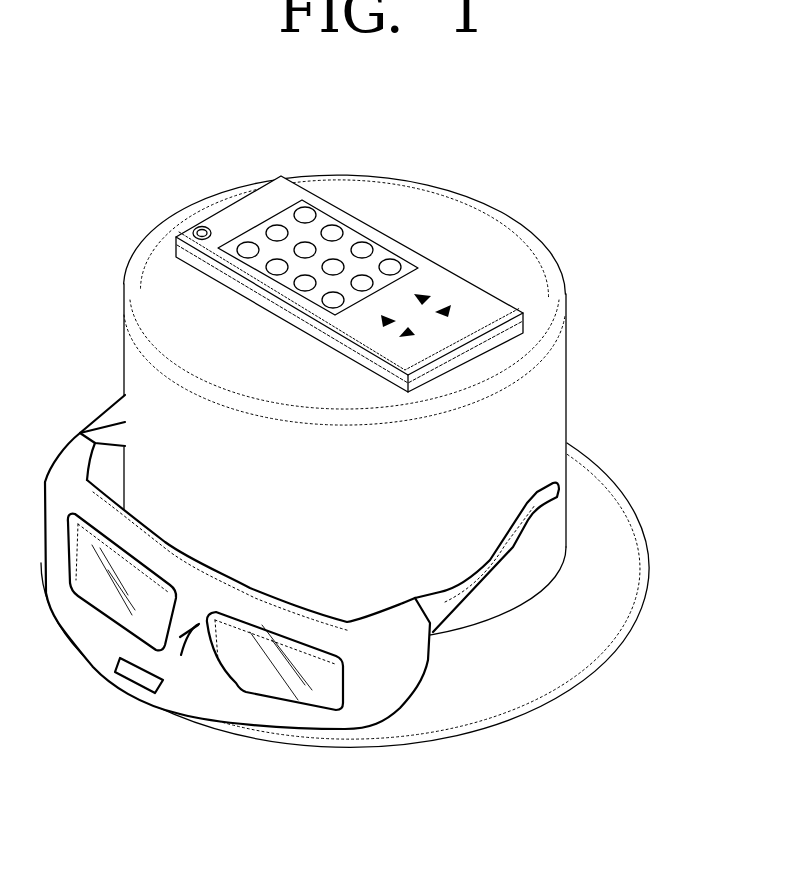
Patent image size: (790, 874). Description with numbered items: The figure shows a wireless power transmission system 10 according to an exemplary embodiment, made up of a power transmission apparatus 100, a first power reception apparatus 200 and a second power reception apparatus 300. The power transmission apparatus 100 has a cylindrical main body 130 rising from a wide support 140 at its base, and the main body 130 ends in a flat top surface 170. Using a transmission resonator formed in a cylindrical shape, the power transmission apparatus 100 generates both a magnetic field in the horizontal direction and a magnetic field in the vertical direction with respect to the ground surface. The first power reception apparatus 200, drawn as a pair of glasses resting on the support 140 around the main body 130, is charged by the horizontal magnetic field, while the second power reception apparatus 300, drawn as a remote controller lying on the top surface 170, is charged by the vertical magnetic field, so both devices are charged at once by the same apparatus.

The wireless power transmission system 10 is at (214, 117).
The power transmission apparatus 100 is at (391, 372).
The main body 130 is at (550, 388).
The support 140 is at (577, 643).
The top surface 170 is at (380, 188).
The first power reception apparatus 200 is at (372, 698).
The second power reception apparatus 300 is at (467, 293).